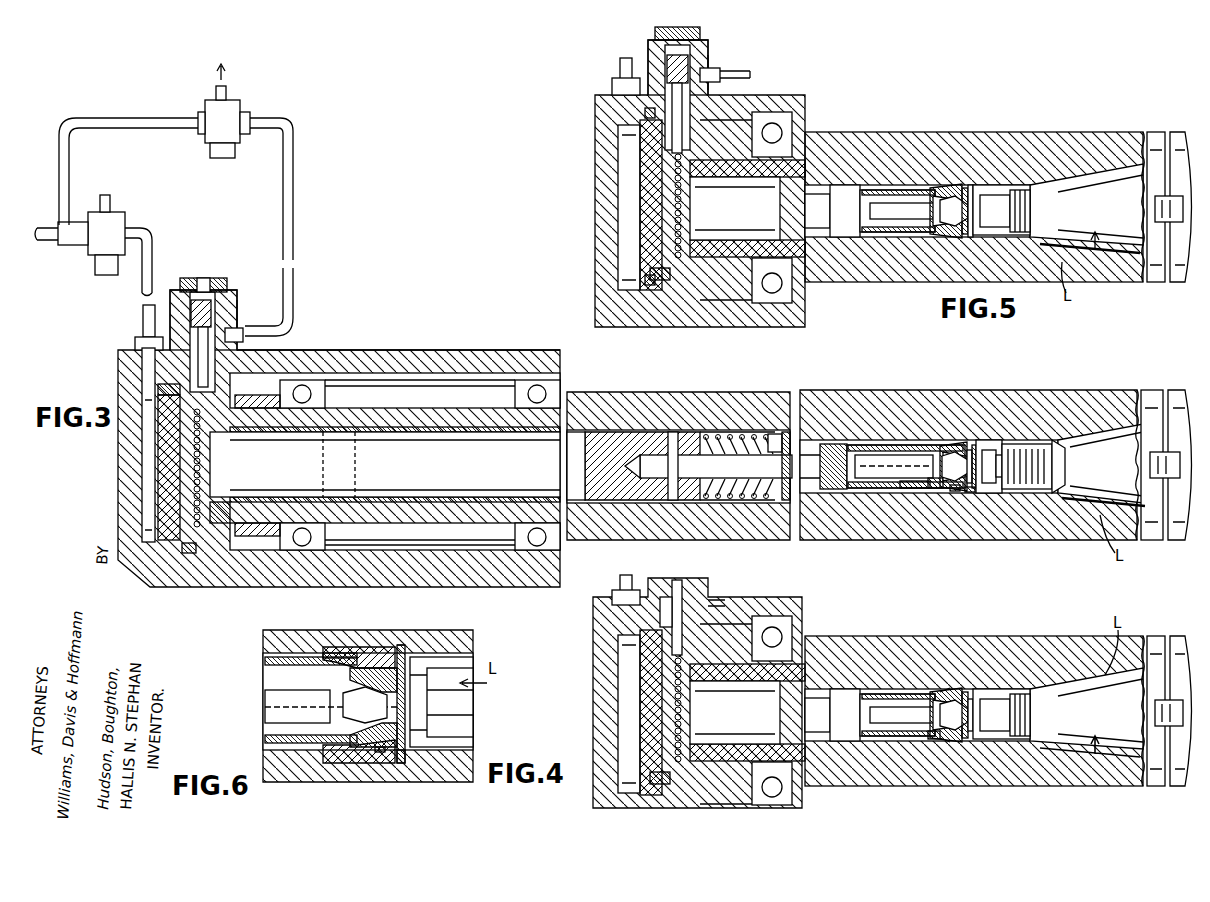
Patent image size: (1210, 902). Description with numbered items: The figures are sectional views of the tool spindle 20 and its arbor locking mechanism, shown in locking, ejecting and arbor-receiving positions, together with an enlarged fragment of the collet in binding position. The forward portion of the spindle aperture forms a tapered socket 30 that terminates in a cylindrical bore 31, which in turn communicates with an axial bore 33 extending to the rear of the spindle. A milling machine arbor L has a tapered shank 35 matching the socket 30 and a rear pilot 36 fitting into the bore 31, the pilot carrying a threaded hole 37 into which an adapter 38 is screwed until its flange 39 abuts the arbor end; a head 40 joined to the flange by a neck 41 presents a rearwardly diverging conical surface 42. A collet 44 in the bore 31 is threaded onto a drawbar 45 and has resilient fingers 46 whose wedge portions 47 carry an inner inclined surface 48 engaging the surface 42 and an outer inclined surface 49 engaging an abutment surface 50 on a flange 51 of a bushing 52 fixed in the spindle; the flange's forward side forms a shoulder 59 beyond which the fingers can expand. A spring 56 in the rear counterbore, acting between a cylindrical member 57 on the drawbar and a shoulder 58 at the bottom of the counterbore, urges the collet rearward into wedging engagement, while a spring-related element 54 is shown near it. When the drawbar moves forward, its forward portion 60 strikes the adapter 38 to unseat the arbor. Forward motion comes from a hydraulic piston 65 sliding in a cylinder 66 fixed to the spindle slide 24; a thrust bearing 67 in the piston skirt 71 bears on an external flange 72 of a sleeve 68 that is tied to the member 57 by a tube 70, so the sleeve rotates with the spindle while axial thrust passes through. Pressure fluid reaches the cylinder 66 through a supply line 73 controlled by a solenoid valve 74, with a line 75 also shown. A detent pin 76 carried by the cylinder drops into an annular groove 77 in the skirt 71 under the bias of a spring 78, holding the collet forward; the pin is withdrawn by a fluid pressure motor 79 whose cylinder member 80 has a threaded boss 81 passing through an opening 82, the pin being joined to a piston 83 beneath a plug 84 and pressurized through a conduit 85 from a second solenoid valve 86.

In FIG. 5, the spindle 20 is at (1095, 132).
In FIG. 4, the spindle 20 is at (998, 711).
In FIG. 3, the spindle 20 is at (1130, 392).
In FIG. 6, the spindle 20 is at (310, 780).
In FIG. 3, the spindle slide 24 is at (450, 350).
In FIG. 5, the tapered socket 30 is at (1112, 140).
In FIG. 5, the cylindrical bore 31 is at (972, 185).
In FIG. 3, the cylindrical bore 31 is at (880, 445).
In FIG. 3, the axial bore 33 is at (778, 458).
In FIG. 5, the shank 35 is at (1095, 265).
In FIG. 3, the shank 35 is at (1095, 508).
In FIG. 5, the pilot 36 is at (1010, 238).
In FIG. 4, the pilot 36 is at (1030, 716).
In FIG. 3, the pilot 36 is at (1020, 444).
In FIG. 3, the threaded hole 37 is at (1055, 448).
In FIG. 5, the adapter 38 is at (985, 200).
In FIG. 4, the adapter 38 is at (1000, 695).
In FIG. 3, the adapter 38 is at (988, 440).
In FIG. 5, the flange 39 is at (977, 218).
In FIG. 4, the flange 39 is at (985, 733).
In FIG. 3, the flange 39 is at (998, 455).
In FIG. 6, the flange 39 is at (428, 730).
In FIG. 5, the head 40 is at (940, 203).
In FIG. 4, the head 40 is at (935, 708).
In FIG. 6, the head 40 is at (350, 752).
In FIG. 5, the neck 41 is at (970, 212).
In FIG. 4, the neck 41 is at (972, 714).
In FIG. 6, the neck 41 is at (390, 705).
In FIG. 5, the conical surface 42 is at (948, 238).
In FIG. 4, the conical surface 42 is at (955, 742).
In FIG. 3, the conical surface 42 is at (960, 492).
In FIG. 6, the conical surface 42 is at (405, 765).
In FIG. 5, the collet 44 is at (866, 195).
In FIG. 4, the collet 44 is at (866, 700).
In FIG. 3, the collet 44 is at (835, 493).
In FIG. 5, the drawbar 45 is at (845, 190).
In FIG. 4, the drawbar 45 is at (845, 700).
In FIG. 3, the drawbar 45 is at (782, 500).
In FIG. 5, the resilient fingers 46 is at (900, 190).
In FIG. 4, the resilient fingers 46 is at (890, 739).
In FIG. 3, the resilient fingers 46 is at (905, 488).
In FIG. 6, the resilient fingers 46 is at (265, 660).
In FIG. 5, the wedge portion 47 is at (945, 195).
In FIG. 4, the wedge portion 47 is at (963, 690).
In FIG. 3, the wedge portion 47 is at (968, 492).
In FIG. 6, the wedge portion 47 is at (405, 700).
In FIG. 4, the inner inclined surface 48 is at (950, 702).
In FIG. 3, the inner inclined surface 48 is at (950, 455).
In FIG. 6, the inner inclined surface 48 is at (360, 655).
In FIG. 5, the outer inclined surface 49 is at (973, 235).
In FIG. 4, the outer inclined surface 49 is at (973, 700).
In FIG. 3, the outer inclined surface 49 is at (968, 450).
In FIG. 6, the outer inclined surface 49 is at (405, 660).
In FIG. 4, the abutment surface 50 is at (933, 740).
In FIG. 3, the abutment surface 50 is at (935, 490).
In FIG. 6, the abutment surface 50 is at (378, 668).
In FIG. 3, the flange 51 is at (957, 491).
In FIG. 6, the flange 51 is at (378, 755).
In FIG. 3, the bushing 52 is at (920, 445).
In FIG. 6, the bushing 52 is at (325, 652).
In FIG. 3, the spring 54 is at (718, 432).
In FIG. 3, the spring 56 is at (705, 500).
In FIG. 3, the cylindrical member 57 is at (640, 440).
In FIG. 3, the shoulder 58 is at (772, 432).
In FIG. 3, the shoulder 59 is at (974, 445).
In FIG. 6, the shoulder 59 is at (401, 645).
In FIG. 5, the forward portion of the drawbar 60 is at (900, 220).
In FIG. 4, the forward portion of the drawbar 60 is at (895, 704).
In FIG. 3, the forward portion of the drawbar 60 is at (880, 478).
In FIG. 6, the forward portion of the drawbar 60 is at (268, 708).
In FIG. 5, the piston 65 is at (628, 205).
In FIG. 4, the piston 65 is at (630, 710).
In FIG. 3, the piston 65 is at (146, 400).
In FIG. 5, the cylinder 66 is at (600, 170).
In FIG. 4, the cylinder 66 is at (600, 676).
In FIG. 3, the cylinder 66 is at (125, 365).
In FIG. 5, the thrust bearing 67 is at (645, 145).
In FIG. 4, the thrust bearing 67 is at (645, 648).
In FIG. 3, the thrust bearing 67 is at (183, 540).
In FIG. 5, the sleeve 68 is at (700, 182).
In FIG. 4, the sleeve 68 is at (745, 685).
In FIG. 3, the sleeve 68 is at (335, 428).
In FIG. 3, the tube 70 is at (440, 490).
In FIG. 3, the skirt 71 is at (190, 556).
In FIG. 5, the external flange 72 is at (710, 235).
In FIG. 4, the external flange 72 is at (700, 690).
In FIG. 3, the external flange 72 is at (225, 525).
In FIG. 5, the fluid pressure supply line 73 is at (618, 70).
In FIG. 4, the fluid pressure supply line 73 is at (620, 582).
In FIG. 3, the solenoid valve 74 is at (118, 220).
In FIG. 3, the conduit 75 is at (142, 290).
In FIG. 5, the detent pin 76 is at (725, 78).
In FIG. 4, the detent pin 76 is at (705, 598).
In FIG. 3, the detent pin 76 is at (245, 336).
In FIG. 5, the annular groove 77 is at (655, 275).
In FIG. 4, the annular groove 77 is at (655, 770).
In FIG. 3, the annular groove 77 is at (170, 384).
In FIG. 5, the spring 78 is at (697, 32).
In FIG. 3, the spring 78 is at (190, 280).
In FIG. 5, the fluid pressure motor 79 is at (719, 62).
In FIG. 4, the fluid pressure motor 79 is at (700, 585).
In FIG. 3, the fluid pressure motor 79 is at (238, 298).
In FIG. 5, the cylinder member 80 is at (650, 48).
In FIG. 3, the cylinder member 80 is at (230, 290).
In FIG. 5, the threaded boss 81 is at (690, 110).
In FIG. 4, the threaded boss 81 is at (688, 625).
In FIG. 3, the threaded boss 81 is at (225, 358).
In FIG. 5, the opening 82 is at (645, 112).
In FIG. 3, the opening 82 is at (242, 388).
In FIG. 5, the piston 83 is at (666, 68).
In FIG. 3, the piston 83 is at (212, 310).
In FIG. 3, the plug 84 is at (205, 278).
In FIG. 3, the conduit 85 is at (293, 218).
In FIG. 3, the solenoid valve 86 is at (235, 105).